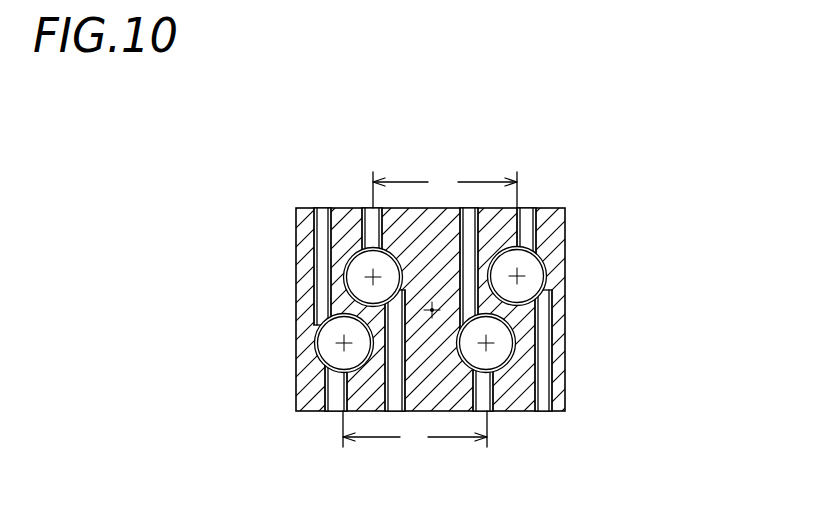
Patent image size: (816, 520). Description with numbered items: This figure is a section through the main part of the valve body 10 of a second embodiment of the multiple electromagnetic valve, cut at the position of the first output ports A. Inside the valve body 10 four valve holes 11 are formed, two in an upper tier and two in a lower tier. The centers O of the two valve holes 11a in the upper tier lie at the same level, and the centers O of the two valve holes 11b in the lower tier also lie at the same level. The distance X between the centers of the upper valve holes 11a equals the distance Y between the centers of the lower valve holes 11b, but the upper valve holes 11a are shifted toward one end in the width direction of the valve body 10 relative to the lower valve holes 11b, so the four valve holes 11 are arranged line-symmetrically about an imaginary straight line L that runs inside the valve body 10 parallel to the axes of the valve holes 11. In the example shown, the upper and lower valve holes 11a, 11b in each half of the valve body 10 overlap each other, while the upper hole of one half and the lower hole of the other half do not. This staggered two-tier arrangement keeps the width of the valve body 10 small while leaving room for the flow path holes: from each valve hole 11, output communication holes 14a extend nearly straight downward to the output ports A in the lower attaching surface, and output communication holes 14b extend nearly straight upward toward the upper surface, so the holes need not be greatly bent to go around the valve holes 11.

The valve body 10 is at (297, 278).
The valve holes 11 is at (441, 302).
The valve holes in the upper tier 11a is at (360, 262).
The valve holes in the lower tier 11b is at (325, 345).
The output communication holes 14a is at (325, 313).
The output communication holes 14b is at (367, 208).
The centers of the valve holes O is at (517, 276).
The imaginary straight line L is at (433, 294).
The distance between the centers of the two valve holes in the upper tier X is at (445, 186).
The distance between the centers of the two valve holes in the lower tier Y is at (415, 434).
The first output port A is at (333, 412).